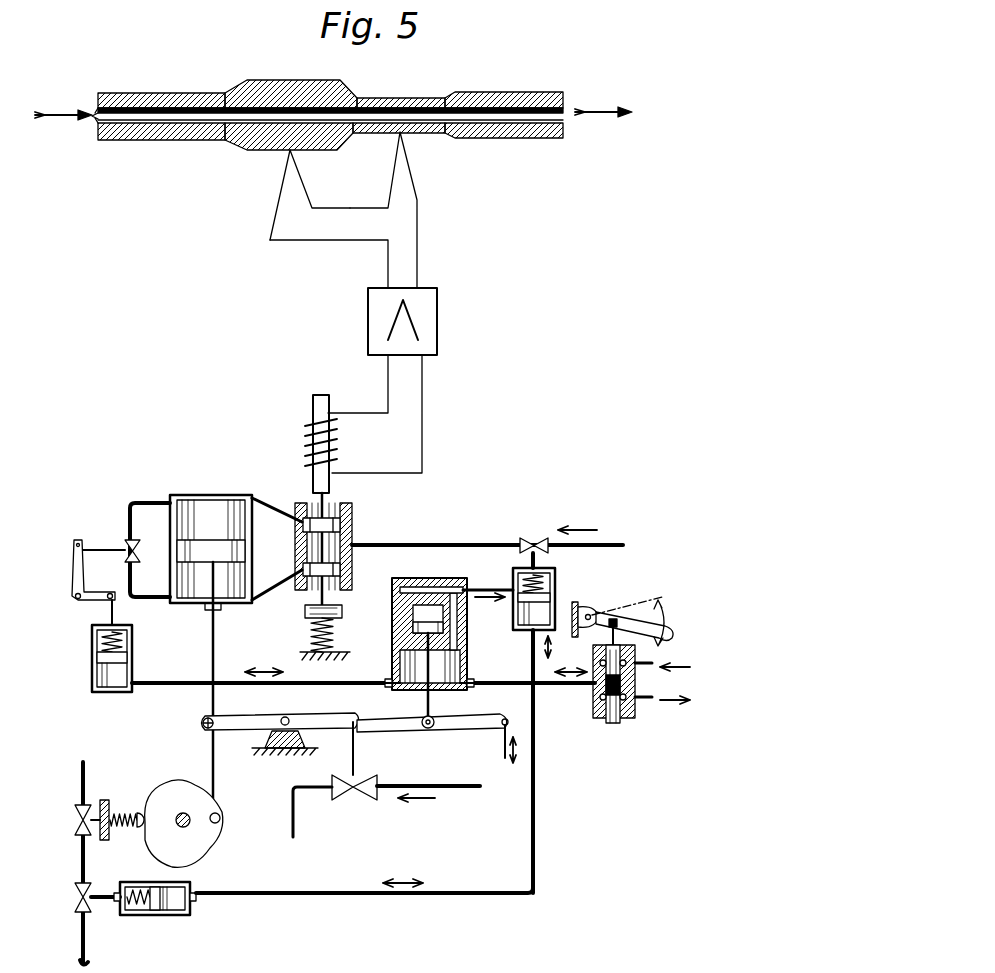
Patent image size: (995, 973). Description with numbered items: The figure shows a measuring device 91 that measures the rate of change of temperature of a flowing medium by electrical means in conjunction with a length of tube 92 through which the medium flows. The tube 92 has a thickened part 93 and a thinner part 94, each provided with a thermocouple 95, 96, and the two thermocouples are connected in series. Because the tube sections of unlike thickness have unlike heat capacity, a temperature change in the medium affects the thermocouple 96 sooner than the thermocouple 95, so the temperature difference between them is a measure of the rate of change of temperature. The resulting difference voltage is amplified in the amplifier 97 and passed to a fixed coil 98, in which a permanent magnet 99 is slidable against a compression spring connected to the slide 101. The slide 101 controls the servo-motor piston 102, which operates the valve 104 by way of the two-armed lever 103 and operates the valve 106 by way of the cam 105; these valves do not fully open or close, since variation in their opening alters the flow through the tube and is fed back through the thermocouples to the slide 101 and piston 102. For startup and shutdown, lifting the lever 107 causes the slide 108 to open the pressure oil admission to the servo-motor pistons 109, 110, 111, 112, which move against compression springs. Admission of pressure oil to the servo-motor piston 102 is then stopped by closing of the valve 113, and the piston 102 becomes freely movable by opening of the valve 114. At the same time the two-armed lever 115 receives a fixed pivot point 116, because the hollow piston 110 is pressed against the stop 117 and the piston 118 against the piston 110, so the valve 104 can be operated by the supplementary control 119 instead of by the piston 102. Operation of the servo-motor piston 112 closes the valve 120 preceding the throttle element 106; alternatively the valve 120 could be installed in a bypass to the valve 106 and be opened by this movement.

The measuring device 91 is at (329, 290).
The length of tube 92 is at (333, 94).
The thickened part 93 is at (285, 80).
The thinner part 94 is at (410, 98).
The thermocouple 95 is at (287, 162).
The thermocouple 96 is at (408, 168).
The amplifier 97 is at (437, 318).
The fixed coil 98 is at (312, 420).
The permanent magnet 99 is at (328, 405).
The slide 101 is at (340, 520).
The servo-motor piston 102 is at (213, 548).
The two-armed lever 103 is at (305, 725).
The valve 104 is at (360, 800).
The cam 105 is at (202, 825).
The valve 106 is at (78, 812).
The lever 107 is at (672, 630).
The slide 108 is at (614, 722).
The servo-motor piston 109 is at (556, 584).
The hollow piston 110 is at (473, 636).
The servo-motor piston 111 is at (132, 660).
The servo-motor piston 112 is at (156, 918).
The valve 113 is at (535, 538).
The valve 114 is at (125, 548).
The two-armed lever 115 is at (440, 732).
The fixed pivot point 116 is at (425, 731).
The stop 117 is at (428, 588).
The piston 118 is at (410, 628).
The supplementary control 119 is at (503, 750).
The valve 120 is at (78, 889).